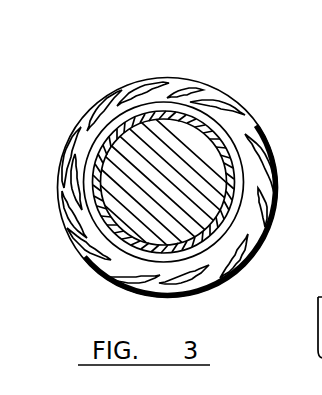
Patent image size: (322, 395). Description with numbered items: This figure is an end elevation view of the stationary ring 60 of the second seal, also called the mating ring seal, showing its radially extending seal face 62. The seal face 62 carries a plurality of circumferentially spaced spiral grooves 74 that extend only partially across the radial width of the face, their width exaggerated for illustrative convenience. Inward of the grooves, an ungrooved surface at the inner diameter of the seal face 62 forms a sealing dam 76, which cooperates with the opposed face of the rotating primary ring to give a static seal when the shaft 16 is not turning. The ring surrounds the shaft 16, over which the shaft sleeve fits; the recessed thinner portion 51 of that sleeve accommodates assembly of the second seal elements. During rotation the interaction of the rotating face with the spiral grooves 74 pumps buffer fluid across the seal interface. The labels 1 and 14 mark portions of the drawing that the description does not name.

The grommet assembly 1 is at (286, 178).
The adjacent panel structure 14 is at (317, 327).
The central body 16 is at (123, 166).
The knurled ring 51 is at (230, 137).
The outer vaned ring 60 is at (97, 92).
The vane 62 is at (97, 262).
The vane 74 is at (272, 217).
The vane 76 is at (230, 250).